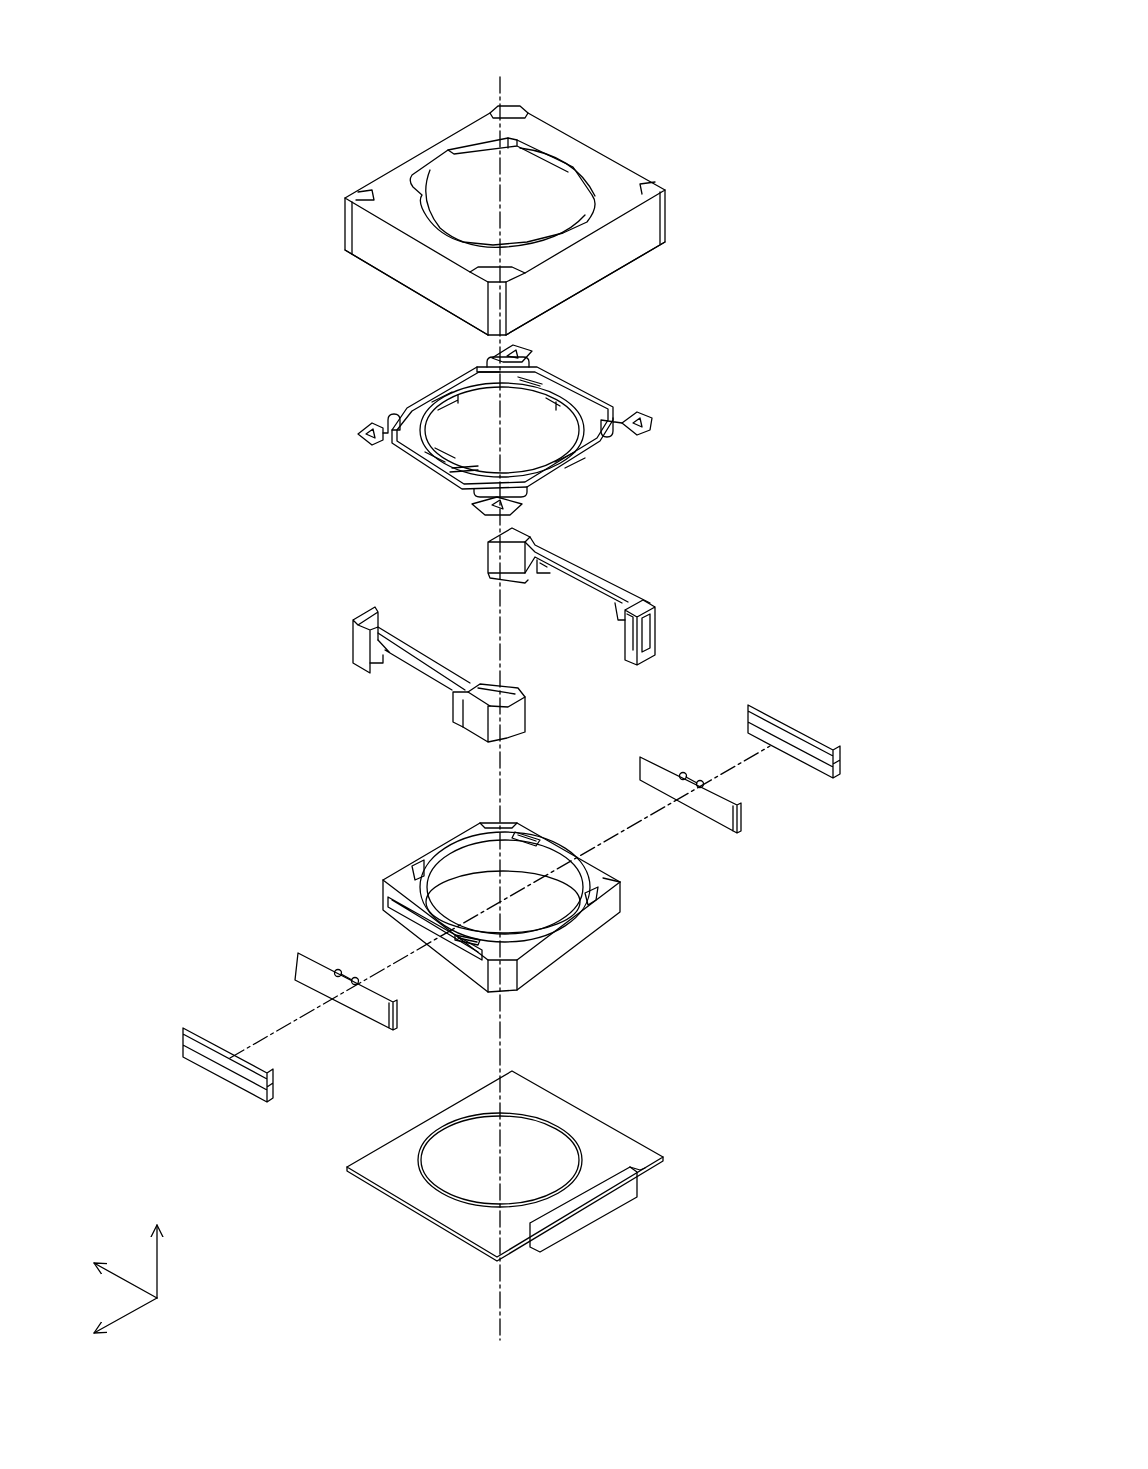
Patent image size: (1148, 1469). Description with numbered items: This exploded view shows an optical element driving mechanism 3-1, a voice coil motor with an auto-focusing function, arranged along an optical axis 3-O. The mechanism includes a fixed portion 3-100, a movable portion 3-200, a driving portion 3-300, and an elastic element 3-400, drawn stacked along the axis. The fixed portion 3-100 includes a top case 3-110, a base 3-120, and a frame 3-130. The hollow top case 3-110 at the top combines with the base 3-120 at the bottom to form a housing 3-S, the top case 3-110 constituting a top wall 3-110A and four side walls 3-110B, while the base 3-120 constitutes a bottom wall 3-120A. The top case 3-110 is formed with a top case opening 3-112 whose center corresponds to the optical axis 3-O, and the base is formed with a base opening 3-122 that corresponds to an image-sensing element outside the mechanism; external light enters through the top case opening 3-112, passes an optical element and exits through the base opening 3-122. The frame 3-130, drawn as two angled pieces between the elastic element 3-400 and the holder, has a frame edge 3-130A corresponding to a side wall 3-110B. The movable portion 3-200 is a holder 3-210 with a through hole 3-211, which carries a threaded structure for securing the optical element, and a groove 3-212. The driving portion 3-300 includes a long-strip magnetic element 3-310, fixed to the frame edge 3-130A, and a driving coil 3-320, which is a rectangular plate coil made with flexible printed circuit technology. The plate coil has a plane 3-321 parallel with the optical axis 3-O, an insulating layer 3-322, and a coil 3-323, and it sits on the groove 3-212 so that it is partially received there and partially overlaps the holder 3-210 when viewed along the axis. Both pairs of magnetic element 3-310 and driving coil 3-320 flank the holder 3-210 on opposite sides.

The optical element driving mechanism 3-1 is at (168, 26).
The optical axis 3-O is at (500, 690).
The top case 3-110 is at (500, 218).
The top wall 3-110A is at (603, 170).
The side wall 3-110B is at (637, 235).
The top case opening 3-112 is at (475, 205).
The elastic element 3-400 is at (645, 413).
The frame 3-130 is at (500, 630).
The frame edge 3-130A is at (587, 577).
The magnetic element 3-310 is at (797, 728).
The driving coil 3-320 is at (518, 887).
The plane 3-321 is at (648, 771).
The insulating layer 3-322 is at (728, 817).
The coil 3-323 is at (700, 778).
The movable portion 3-200 is at (496, 916).
The holder 3-210 is at (476, 907).
The through hole 3-211 is at (544, 901).
The groove 3-212 is at (402, 917).
The base 3-120 is at (623, 1145).
The bottom wall 3-120A is at (562, 1145).
The base opening 3-122 is at (527, 1145).
The housing 3-S is at (147, 380).
The fixed portion 3-100 is at (147, 467).
The driving portion 3-300 is at (147, 582).